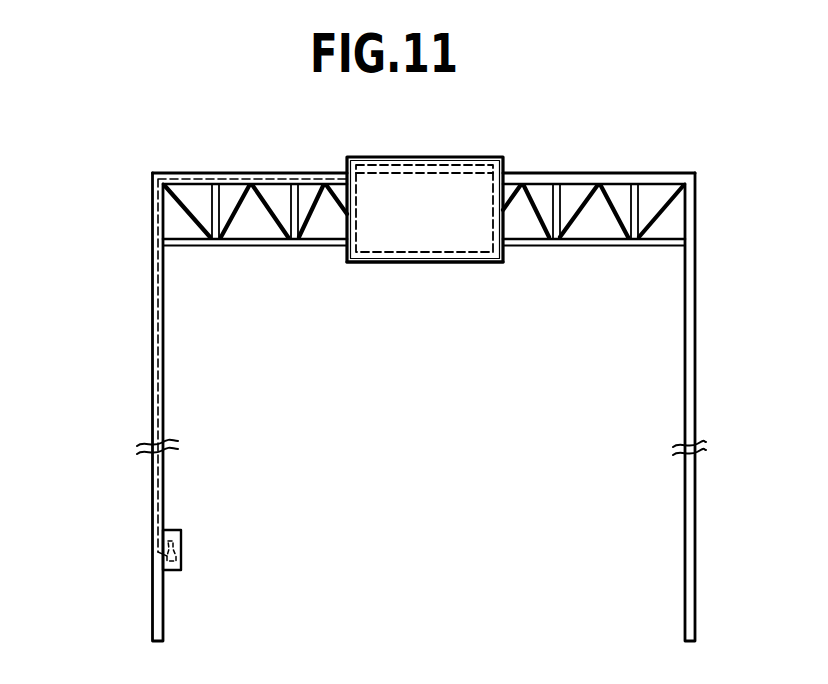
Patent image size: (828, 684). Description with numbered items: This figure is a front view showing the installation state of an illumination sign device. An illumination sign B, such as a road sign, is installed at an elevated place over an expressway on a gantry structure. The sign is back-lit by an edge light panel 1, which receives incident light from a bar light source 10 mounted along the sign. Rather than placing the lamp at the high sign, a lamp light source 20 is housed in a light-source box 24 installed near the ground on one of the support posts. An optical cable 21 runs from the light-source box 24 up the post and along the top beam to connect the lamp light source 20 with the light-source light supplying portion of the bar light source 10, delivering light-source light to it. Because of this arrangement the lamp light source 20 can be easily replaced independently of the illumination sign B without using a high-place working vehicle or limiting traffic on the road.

The bar light source 10 is at (453, 167).
The edge light panel 1 is at (385, 240).
The illumination sign B is at (465, 263).
The optical cable 21 is at (153, 338).
The light-source box 24 is at (181, 531).
The lamp light source 20 is at (176, 557).